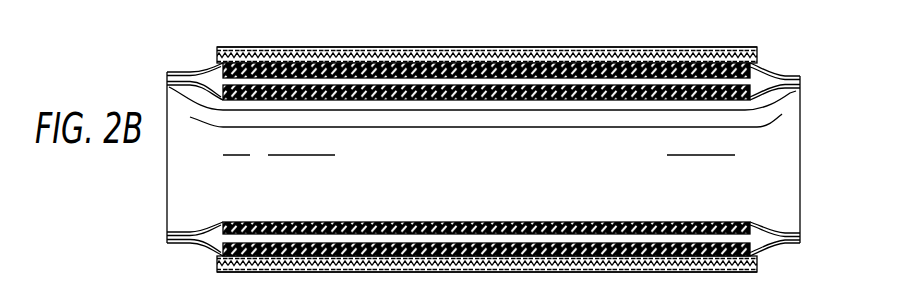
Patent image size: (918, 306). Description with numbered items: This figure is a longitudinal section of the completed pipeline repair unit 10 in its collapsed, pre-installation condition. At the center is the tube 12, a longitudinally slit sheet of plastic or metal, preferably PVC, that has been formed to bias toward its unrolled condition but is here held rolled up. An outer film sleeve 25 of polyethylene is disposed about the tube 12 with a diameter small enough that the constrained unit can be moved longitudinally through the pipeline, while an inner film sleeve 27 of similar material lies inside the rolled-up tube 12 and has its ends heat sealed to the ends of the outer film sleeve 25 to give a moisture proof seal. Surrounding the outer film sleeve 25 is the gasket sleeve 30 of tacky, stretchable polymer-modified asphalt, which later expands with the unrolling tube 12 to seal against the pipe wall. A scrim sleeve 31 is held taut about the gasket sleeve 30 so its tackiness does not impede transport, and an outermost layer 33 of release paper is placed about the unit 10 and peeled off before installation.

The pipeline repair unit 10 is at (838, 47).
The tube 12 is at (527, 68).
The outer film sleeve 25 is at (770, 72).
The inner film sleeve 27 is at (777, 117).
The gasket sleeve 30 is at (418, 47).
The scrim sleeve 31 is at (303, 47).
The layer of release paper 33 is at (224, 47).